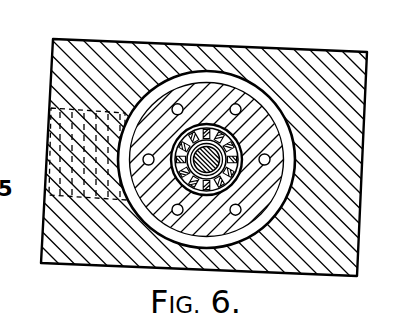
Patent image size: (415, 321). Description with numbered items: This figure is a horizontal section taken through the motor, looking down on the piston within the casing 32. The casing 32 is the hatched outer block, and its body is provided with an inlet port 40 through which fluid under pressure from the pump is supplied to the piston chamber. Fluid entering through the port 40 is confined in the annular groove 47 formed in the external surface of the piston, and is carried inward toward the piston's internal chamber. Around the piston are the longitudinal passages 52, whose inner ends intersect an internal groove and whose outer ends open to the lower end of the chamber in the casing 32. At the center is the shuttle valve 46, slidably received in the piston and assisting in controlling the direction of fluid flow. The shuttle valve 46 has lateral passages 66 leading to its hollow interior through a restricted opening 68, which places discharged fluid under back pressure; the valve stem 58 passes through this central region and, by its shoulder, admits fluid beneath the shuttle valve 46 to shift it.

The casing 32 is at (146, 46).
The inlet port 40 is at (50, 85).
The annular groove 47 is at (266, 100).
The valve stem 58 is at (187, 177).
The passages 52 is at (178, 104).
The shuttle valve 46 is at (232, 158).
The lateral passages 66 is at (216, 128).
The restricted opening 68 is at (218, 166).